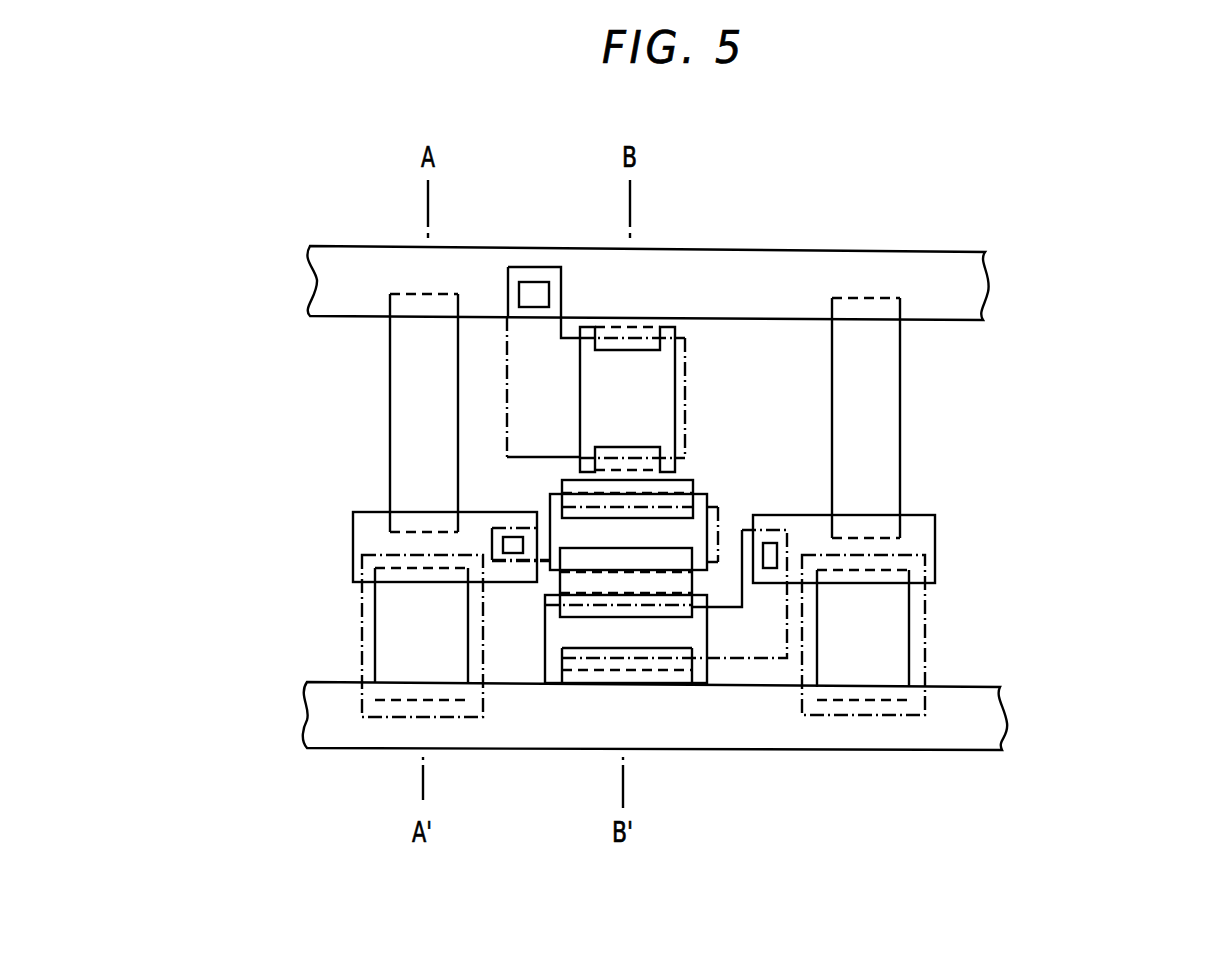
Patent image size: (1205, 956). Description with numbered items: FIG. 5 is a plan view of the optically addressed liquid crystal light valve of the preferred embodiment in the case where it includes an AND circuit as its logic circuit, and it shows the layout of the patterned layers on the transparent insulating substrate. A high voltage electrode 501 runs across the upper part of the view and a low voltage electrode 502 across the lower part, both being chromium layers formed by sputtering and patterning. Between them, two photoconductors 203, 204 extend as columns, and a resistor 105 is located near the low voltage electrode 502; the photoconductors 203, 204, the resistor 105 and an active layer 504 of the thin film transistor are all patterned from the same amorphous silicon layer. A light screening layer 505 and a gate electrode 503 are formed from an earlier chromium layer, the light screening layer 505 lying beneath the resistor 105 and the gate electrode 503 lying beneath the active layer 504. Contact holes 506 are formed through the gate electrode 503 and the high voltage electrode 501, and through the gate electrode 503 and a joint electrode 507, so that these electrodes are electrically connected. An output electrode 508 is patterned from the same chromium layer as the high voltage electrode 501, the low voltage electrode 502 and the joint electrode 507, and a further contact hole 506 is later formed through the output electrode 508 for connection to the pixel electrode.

The high voltage electrode 501 is at (867, 275).
The low voltage electrode 502 is at (898, 733).
The gate electrode 503 is at (685, 383).
The active layer 504 is at (673, 322).
The light screening layer 505 is at (362, 642).
The contact holes 506 is at (770, 550).
The joint electrode 507 is at (478, 525).
The output electrode 508 is at (576, 478).
The photoconductor 203 is at (397, 385).
The photoconductor 204 is at (888, 407).
The resistor 105 is at (383, 617).